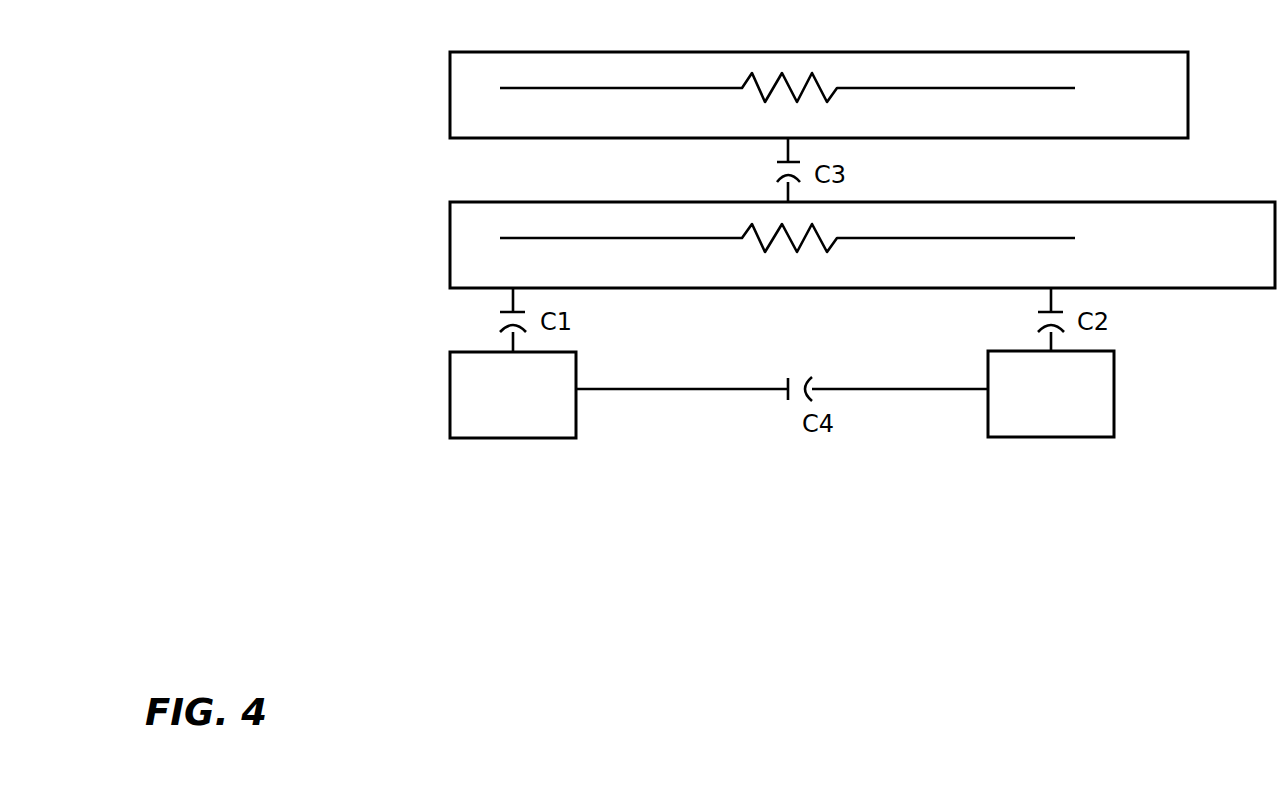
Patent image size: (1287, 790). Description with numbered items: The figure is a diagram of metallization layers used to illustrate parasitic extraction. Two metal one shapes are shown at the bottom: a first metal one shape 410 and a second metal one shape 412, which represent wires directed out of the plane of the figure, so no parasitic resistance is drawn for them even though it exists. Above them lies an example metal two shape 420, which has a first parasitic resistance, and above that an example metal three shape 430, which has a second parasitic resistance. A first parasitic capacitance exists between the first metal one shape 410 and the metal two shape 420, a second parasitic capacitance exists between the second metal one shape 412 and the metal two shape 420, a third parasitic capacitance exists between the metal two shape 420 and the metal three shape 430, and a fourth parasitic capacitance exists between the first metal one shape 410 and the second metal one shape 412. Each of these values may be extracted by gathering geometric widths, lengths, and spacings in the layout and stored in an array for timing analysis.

The first metal one shape 410 is at (516, 428).
The second metal one shape 412 is at (1090, 428).
The metal two shape 420 is at (1253, 266).
The metal three shape 430 is at (1167, 116).